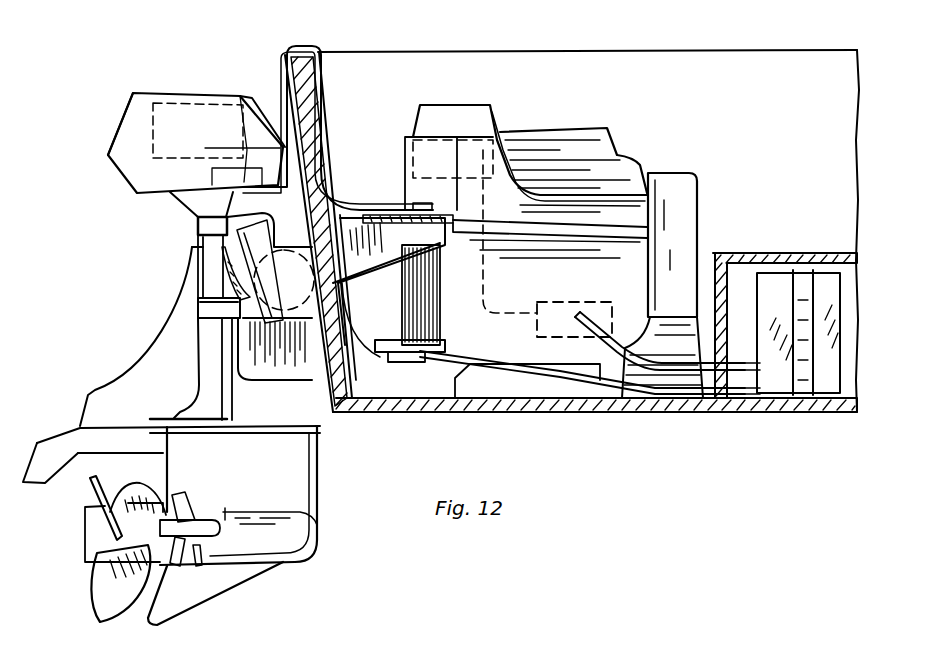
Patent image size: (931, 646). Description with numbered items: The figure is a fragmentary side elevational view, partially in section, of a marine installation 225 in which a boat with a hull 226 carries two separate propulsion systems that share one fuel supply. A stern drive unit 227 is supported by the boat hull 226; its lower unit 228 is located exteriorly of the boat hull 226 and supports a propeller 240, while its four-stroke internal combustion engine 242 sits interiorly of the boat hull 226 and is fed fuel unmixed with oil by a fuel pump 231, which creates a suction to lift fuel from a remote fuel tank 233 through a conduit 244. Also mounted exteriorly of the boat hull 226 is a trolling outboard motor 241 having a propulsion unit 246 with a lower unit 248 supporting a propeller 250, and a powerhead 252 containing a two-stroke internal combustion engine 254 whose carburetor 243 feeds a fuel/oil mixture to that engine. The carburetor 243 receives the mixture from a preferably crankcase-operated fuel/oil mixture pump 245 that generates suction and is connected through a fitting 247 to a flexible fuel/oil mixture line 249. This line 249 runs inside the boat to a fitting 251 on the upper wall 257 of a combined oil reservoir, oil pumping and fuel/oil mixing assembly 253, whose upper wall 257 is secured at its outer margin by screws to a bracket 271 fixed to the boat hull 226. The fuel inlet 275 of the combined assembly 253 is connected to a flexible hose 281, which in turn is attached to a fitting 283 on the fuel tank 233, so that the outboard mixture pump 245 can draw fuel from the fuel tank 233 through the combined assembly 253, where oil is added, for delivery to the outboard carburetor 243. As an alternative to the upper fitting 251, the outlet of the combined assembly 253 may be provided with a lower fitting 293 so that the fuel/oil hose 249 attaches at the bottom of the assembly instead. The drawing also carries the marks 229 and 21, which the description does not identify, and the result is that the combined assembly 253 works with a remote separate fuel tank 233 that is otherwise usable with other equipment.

The boat 21 is at (700, 624).
The marine installation 225 is at (785, 151).
The boat hull 226 is at (434, 58).
The stern drive unit 227 is at (683, 124).
The lower unit 228 is at (170, 332).
The seat pedestal 229 is at (496, 135).
The fuel pump 231 is at (588, 300).
The fuel tank 233 is at (772, 288).
The propeller 240 is at (96, 588).
The trolling outboard motor 241 is at (148, 149).
The four-stroke internal combustion engine 242 is at (662, 285).
The carburetor 243 is at (249, 106).
The conduit 244 is at (690, 385).
The fuel/oil mixture pump 245 is at (180, 206).
The propulsion unit 246 is at (210, 348).
The fitting 247 is at (196, 224).
The lower unit 248 is at (193, 459).
The fuel/oil mixture line 249 is at (322, 92).
The propeller 250 is at (148, 490).
The fitting 251 is at (420, 205).
The powerhead 252 is at (134, 108).
The combined oil reservoir, oil pumping and fuel/oil mixing assembly 253 is at (405, 292).
The two-stroke internal combustion engine 254 is at (190, 107).
The upper wall 257 is at (465, 218).
The bracket 271 is at (352, 222).
The fuel inlet 275 is at (423, 363).
The flexible hose 281 is at (592, 390).
The fitting 283 is at (758, 398).
The fitting 293 is at (397, 360).